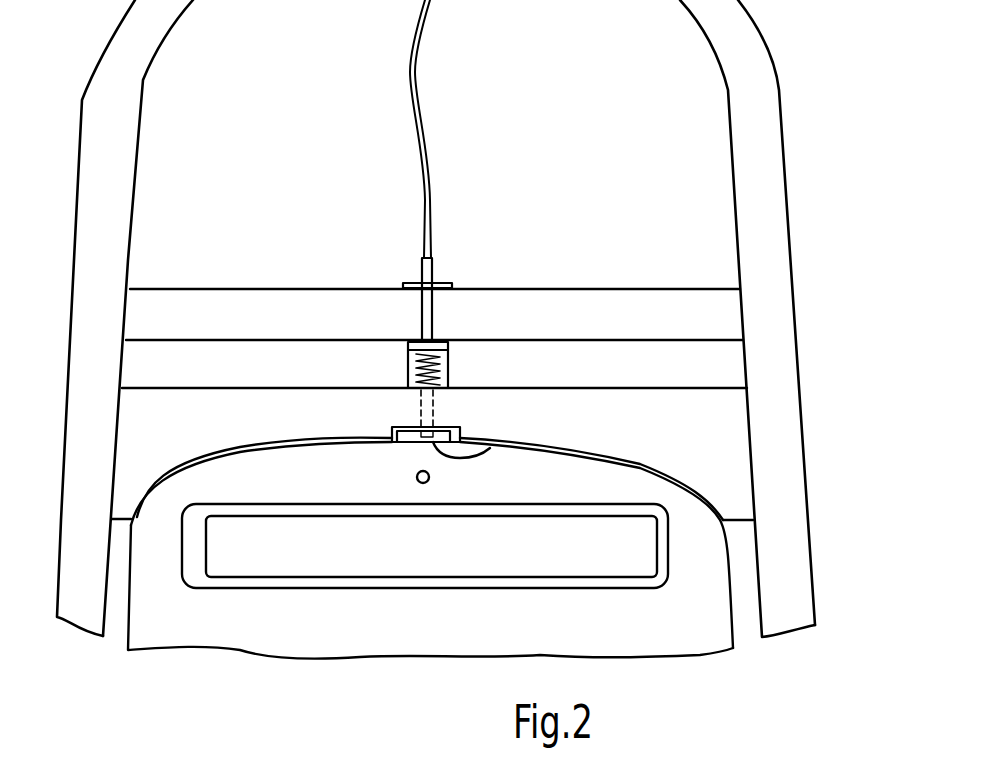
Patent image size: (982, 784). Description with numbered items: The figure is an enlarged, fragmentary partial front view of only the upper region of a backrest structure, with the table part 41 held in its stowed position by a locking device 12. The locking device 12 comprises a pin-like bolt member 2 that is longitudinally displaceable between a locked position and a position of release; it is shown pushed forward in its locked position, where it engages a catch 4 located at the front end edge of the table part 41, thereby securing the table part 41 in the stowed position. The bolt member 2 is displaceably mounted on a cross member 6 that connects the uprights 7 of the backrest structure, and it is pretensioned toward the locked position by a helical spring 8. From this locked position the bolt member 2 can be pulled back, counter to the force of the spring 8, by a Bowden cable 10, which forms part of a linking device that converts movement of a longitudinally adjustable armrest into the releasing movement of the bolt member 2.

The bolt member 2 is at (497, 442).
The catch 4 is at (405, 438).
The cross member 6 is at (678, 312).
The uprights 7 is at (95, 212).
The helical spring 8 is at (450, 368).
The Bowden cable 10 is at (415, 72).
The locking device 12 is at (394, 256).
The table part 41 is at (600, 478).